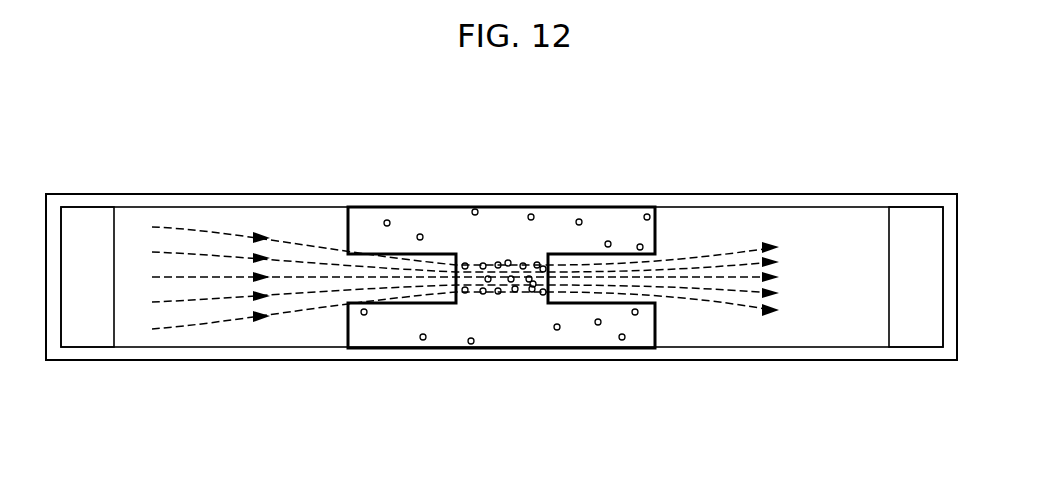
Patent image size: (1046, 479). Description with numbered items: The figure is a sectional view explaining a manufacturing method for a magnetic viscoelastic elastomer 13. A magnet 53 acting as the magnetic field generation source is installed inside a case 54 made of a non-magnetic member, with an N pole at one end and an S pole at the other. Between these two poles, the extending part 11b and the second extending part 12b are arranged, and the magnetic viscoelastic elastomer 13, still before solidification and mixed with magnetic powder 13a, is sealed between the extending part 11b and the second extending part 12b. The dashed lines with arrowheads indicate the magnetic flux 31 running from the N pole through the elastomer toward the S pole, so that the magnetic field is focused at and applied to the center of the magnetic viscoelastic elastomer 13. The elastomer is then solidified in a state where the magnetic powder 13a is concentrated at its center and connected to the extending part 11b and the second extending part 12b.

The case 54 is at (622, 193).
The magnet 53 is at (90, 227).
The extending part 11b is at (250, 206).
The second extending part 12b is at (758, 206).
The magnetic flux lines 31 is at (227, 277).
The magnetic viscoelastic elastomer 13 is at (510, 206).
The magnetic powder 13a is at (498, 294).